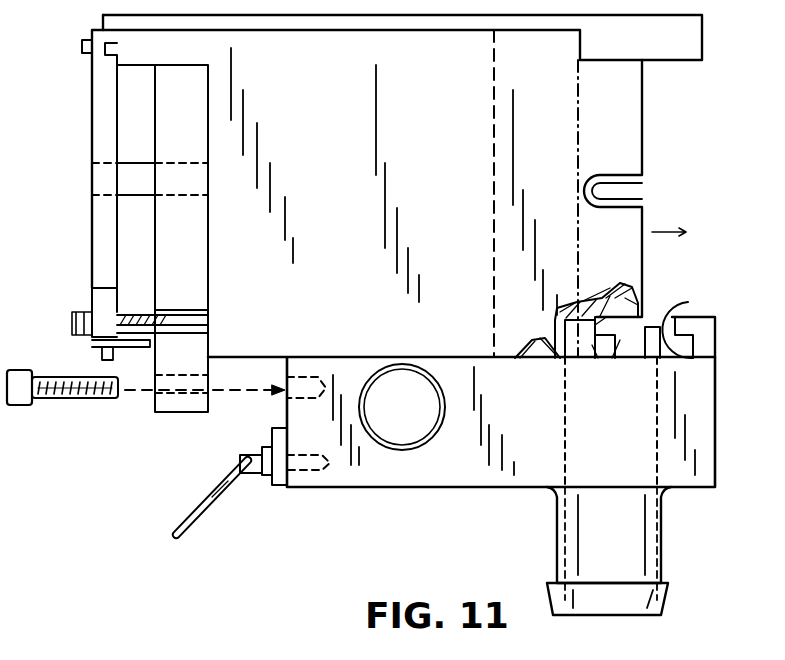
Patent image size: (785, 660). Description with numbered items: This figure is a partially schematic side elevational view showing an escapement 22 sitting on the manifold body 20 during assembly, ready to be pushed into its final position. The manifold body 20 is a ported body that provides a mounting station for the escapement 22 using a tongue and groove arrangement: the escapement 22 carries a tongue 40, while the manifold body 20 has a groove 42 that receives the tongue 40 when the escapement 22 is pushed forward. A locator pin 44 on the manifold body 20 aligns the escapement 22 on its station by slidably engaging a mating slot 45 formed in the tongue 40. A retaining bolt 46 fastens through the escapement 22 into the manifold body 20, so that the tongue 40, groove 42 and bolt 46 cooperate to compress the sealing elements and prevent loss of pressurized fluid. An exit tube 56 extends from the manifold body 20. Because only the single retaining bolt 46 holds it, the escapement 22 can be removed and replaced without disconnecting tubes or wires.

The manifold body 20 is at (717, 440).
The escapement 22 is at (642, 130).
The tongue 40 is at (628, 355).
The groove 42 is at (680, 318).
The locator pin 44 is at (650, 328).
The slot 45 is at (585, 352).
The retaining bolt 46 is at (96, 393).
The exit tube 56 is at (663, 552).